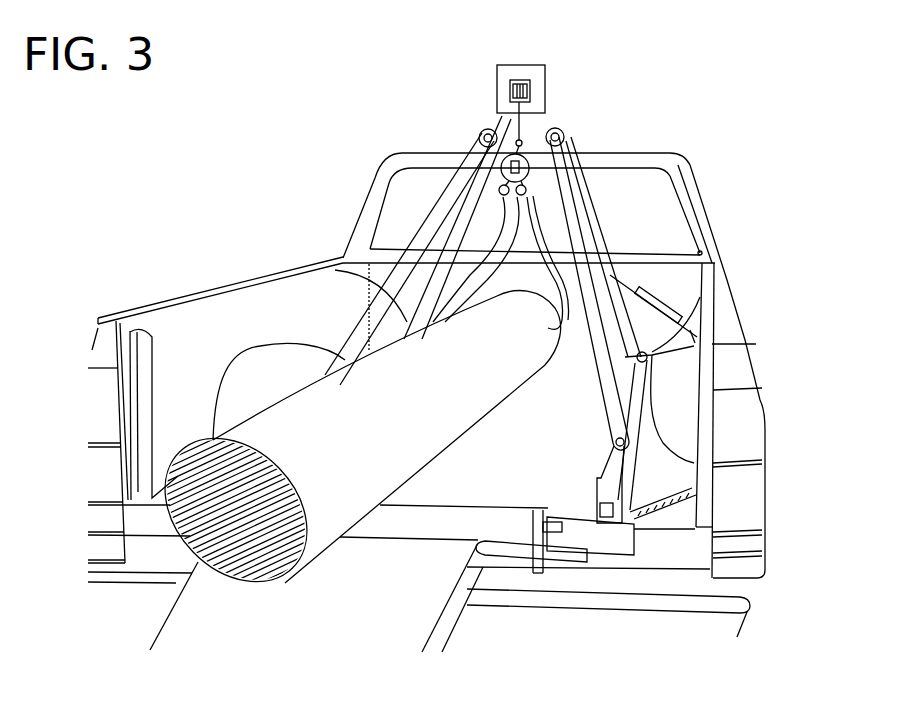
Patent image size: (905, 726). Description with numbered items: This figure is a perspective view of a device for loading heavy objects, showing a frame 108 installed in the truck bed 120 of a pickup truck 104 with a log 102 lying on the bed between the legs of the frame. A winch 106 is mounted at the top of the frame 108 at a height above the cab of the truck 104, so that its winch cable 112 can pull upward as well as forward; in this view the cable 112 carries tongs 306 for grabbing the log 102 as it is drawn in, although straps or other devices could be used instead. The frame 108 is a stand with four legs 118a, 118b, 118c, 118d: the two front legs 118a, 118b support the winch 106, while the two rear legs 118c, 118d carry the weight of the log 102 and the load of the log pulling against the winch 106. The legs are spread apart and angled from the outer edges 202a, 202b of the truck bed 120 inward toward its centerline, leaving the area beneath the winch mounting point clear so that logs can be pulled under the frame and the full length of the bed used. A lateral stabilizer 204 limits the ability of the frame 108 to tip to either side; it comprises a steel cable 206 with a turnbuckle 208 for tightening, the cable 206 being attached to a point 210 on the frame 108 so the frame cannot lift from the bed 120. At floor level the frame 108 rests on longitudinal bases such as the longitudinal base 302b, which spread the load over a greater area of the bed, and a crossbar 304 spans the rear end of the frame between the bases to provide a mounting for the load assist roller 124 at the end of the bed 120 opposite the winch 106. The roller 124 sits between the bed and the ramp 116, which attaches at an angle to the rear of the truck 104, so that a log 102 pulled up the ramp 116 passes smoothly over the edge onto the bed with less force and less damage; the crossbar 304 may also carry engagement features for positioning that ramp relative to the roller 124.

The log 102 is at (388, 410).
The pickup truck 104 is at (700, 187).
The winch 106 is at (543, 95).
The frame 108 is at (588, 296).
The winch cable 112 is at (540, 102).
The ramp 116 is at (300, 635).
The leg 118a is at (537, 127).
The leg 118b is at (500, 128).
The leg 118c is at (577, 228).
The leg 118d is at (435, 212).
The truck bed 120 is at (680, 482).
The roller 124 is at (423, 517).
The outer edge of the truck bed 202a is at (217, 303).
The outer edge of the truck bed 202b is at (743, 383).
The lateral stabilizer 204 is at (700, 333).
The steel cable 206 is at (280, 276).
The turnbuckle 208 is at (670, 317).
The attachment point 210 is at (563, 153).
The longitudinal base 302b is at (612, 458).
The crossbar 304 is at (614, 540).
The tongs 306 is at (487, 298).